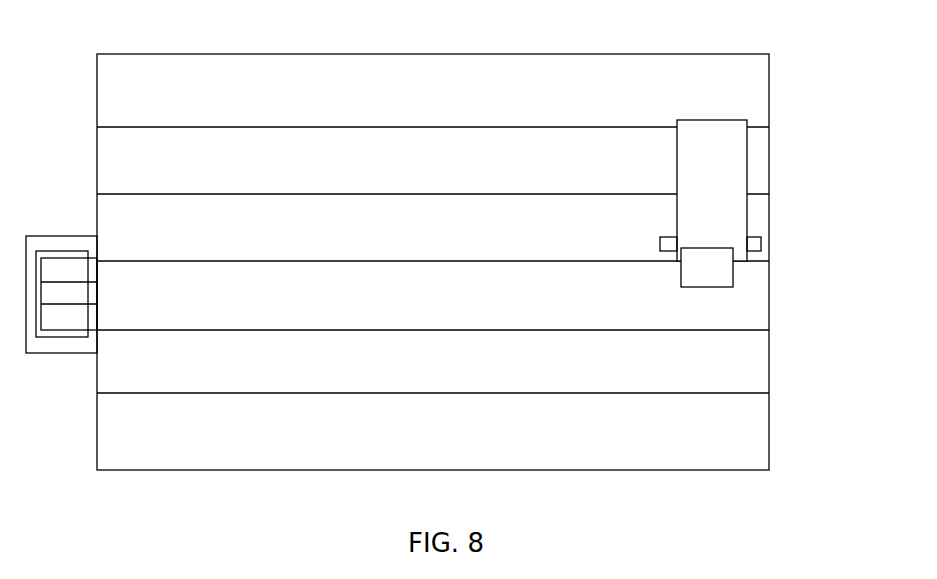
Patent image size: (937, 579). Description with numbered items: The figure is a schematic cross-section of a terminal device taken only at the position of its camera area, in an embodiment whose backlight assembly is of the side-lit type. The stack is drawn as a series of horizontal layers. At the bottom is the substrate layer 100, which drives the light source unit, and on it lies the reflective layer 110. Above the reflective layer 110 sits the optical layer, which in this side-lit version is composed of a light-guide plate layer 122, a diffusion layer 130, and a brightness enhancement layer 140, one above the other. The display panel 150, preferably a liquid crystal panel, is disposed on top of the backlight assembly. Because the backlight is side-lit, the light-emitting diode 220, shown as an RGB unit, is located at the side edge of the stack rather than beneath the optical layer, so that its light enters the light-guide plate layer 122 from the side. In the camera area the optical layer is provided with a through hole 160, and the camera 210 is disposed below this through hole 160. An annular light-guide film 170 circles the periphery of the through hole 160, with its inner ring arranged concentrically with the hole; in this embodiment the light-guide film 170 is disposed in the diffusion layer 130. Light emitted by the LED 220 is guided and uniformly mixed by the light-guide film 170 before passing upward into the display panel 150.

The substrate layer 100 is at (771, 438).
The reflective layer 110 is at (771, 365).
The light-guide plate layer 122 is at (771, 297).
The diffusion layer 130 is at (771, 216).
The brightness enhancement layer 140 is at (771, 166).
The display panel 150 is at (771, 98).
The through hole 160 is at (717, 160).
The light-guide film 170 is at (764, 246).
The camera 210 is at (695, 287).
The light-emitting diode (LED) 220 is at (53, 358).